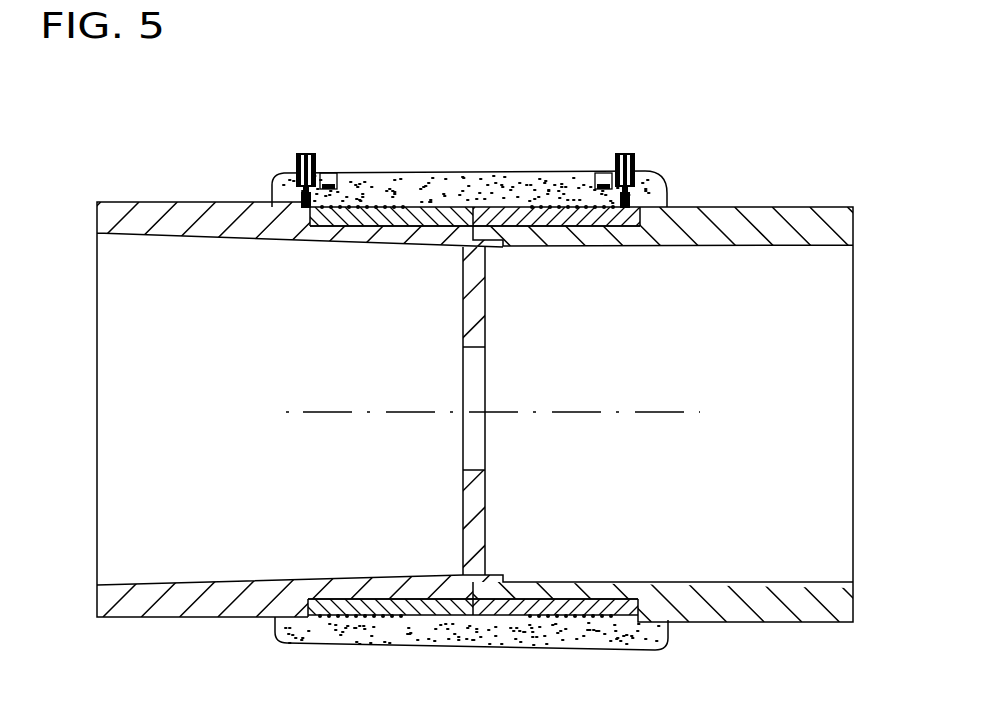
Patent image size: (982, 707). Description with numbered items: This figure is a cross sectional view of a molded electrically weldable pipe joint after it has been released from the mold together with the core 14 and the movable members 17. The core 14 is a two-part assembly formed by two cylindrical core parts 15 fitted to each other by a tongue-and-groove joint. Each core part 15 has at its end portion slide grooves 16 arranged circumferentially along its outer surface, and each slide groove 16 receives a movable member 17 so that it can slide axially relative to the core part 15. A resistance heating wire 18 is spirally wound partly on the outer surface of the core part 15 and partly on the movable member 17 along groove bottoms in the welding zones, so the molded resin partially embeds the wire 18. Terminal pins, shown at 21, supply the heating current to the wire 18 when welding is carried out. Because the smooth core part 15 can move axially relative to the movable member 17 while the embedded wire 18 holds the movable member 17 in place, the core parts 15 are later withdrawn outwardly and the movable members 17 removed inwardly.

The core 14 is at (777, 184).
The core part 15 is at (325, 230).
The slide groove 16 is at (400, 228).
The movable member 17 is at (517, 208).
The resistance heating wire 18 is at (572, 208).
The bolt 21 is at (305, 150).